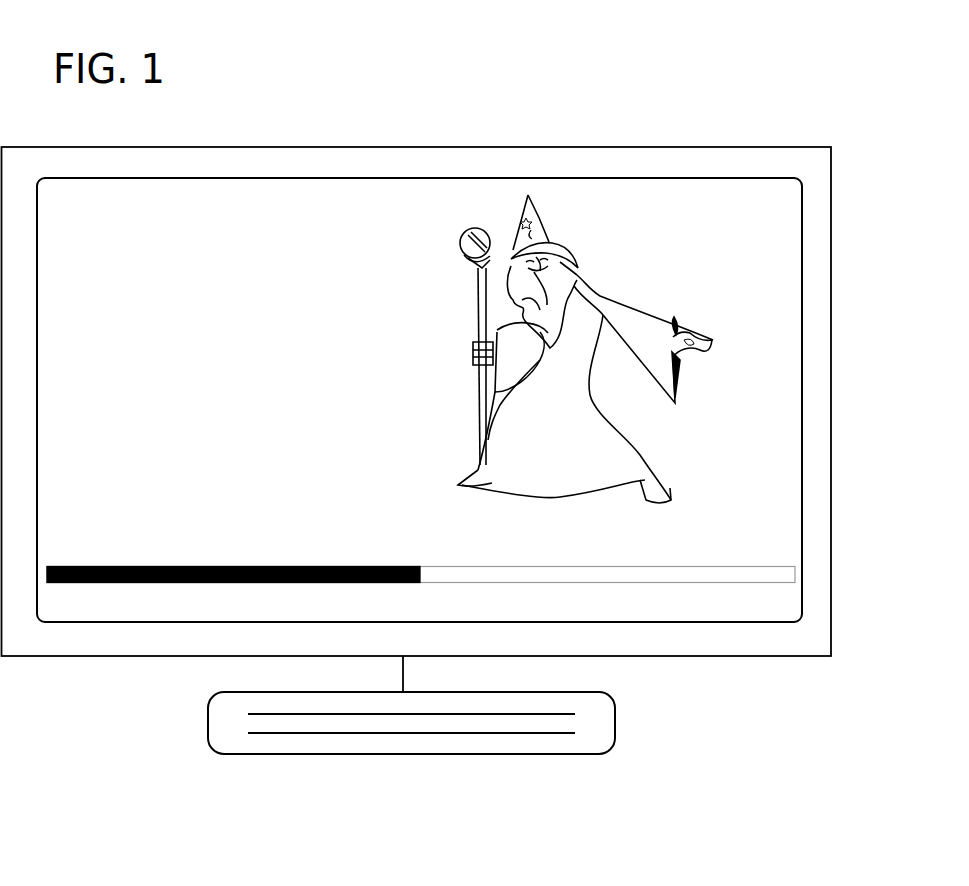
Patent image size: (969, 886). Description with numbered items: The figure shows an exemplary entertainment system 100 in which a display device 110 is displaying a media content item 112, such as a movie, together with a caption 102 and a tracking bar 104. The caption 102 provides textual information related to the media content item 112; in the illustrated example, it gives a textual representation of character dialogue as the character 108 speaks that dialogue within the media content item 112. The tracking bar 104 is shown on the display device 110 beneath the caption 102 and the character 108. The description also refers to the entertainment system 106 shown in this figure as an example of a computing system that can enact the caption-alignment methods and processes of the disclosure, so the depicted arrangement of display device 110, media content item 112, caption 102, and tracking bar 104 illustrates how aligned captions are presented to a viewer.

The entertainment system 100 is at (720, 66).
The display device 110 is at (636, 142).
The media content item 112 is at (417, 217).
The character 108 is at (613, 291).
The caption 102 is at (192, 469).
The tracking bar 104 is at (167, 585).
The entertainment system 106 is at (613, 757).